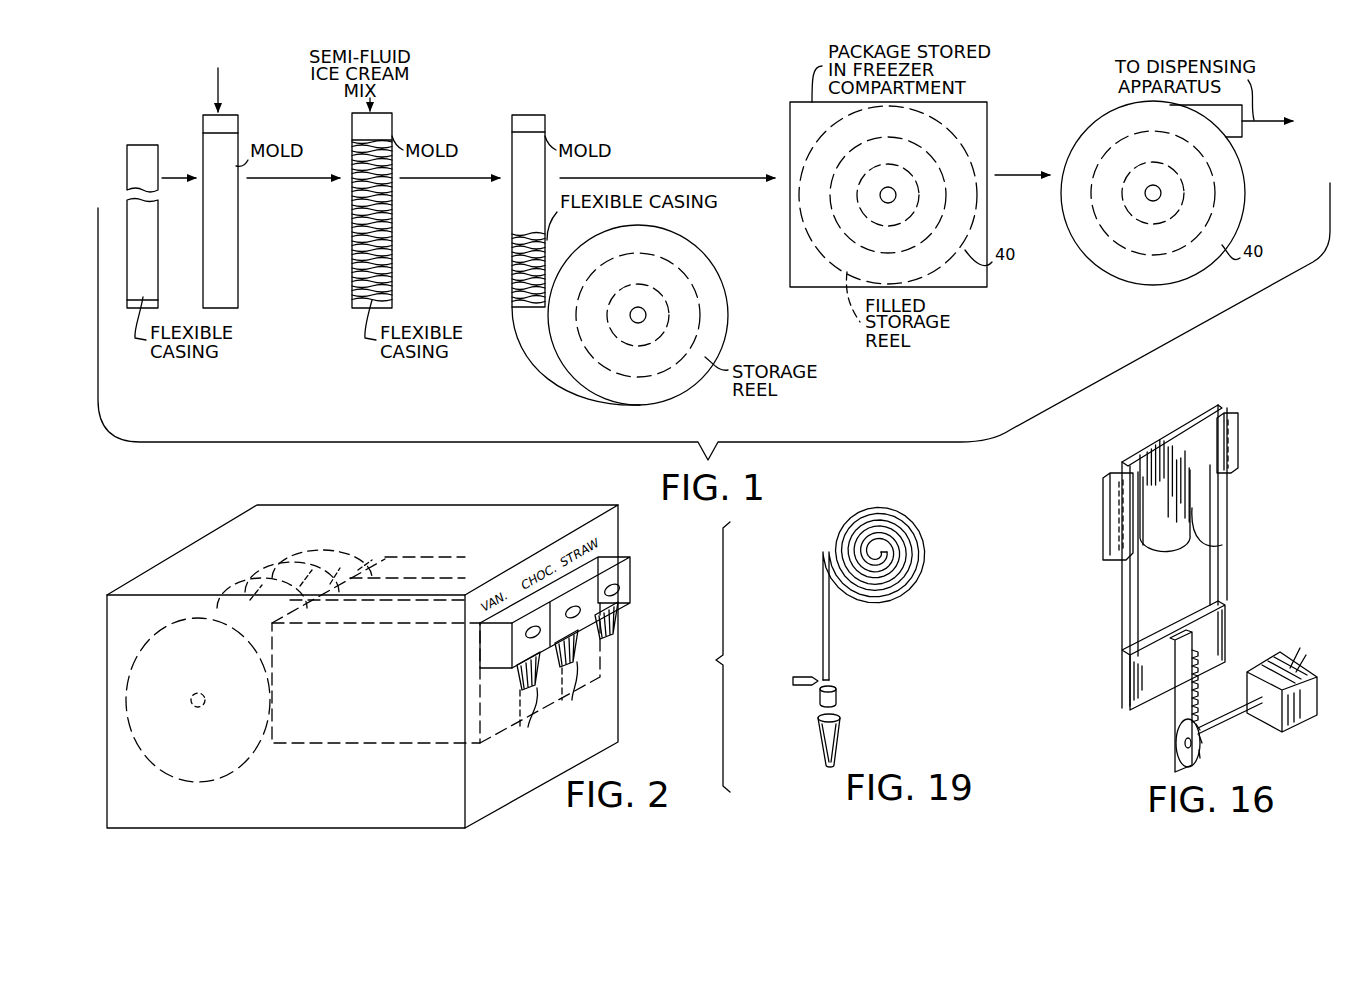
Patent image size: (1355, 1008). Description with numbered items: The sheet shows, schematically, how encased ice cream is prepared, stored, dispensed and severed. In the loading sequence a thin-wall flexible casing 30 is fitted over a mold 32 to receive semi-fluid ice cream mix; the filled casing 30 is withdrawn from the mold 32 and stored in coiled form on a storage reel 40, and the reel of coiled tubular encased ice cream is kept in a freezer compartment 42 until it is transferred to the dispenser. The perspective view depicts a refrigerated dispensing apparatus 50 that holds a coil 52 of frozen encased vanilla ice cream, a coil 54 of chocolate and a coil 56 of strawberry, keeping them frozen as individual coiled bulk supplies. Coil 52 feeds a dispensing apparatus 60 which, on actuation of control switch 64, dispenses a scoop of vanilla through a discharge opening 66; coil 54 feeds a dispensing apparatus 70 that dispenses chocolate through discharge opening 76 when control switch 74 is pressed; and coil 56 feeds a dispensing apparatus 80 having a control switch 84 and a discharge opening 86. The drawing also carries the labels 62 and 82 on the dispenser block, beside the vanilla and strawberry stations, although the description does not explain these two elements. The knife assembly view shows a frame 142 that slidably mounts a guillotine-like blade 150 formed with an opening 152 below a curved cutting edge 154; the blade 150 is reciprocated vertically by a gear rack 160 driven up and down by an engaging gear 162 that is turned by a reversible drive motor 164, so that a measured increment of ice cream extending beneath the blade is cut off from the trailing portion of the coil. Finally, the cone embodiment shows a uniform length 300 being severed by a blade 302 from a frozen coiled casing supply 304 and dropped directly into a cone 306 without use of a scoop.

In FIG. 1, the flexible casing 30 is at (160, 255).
In FIG. 1, the mold 32 is at (240, 255).
In FIG. 1, the storage reel 40 is at (705, 265).
In FIG. 1, the freezer compartment 42 is at (788, 117).
In FIG. 2, the refrigerated dispensing apparatus 50 is at (432, 522).
In FIG. 2, the coil of frozen tubular encased vanilla ice cream 52 is at (185, 616).
In FIG. 2, the coil of frozen tubular encased chocolate ice cream 54 is at (250, 574).
In FIG. 2, the coil of frozen tubular encased strawberry ice cream 56 is at (318, 557).
In FIG. 2, the dispensing apparatus 60 is at (380, 620).
In FIG. 2, the dispenser block 62 is at (492, 650).
In FIG. 2, the control switch 64 is at (524, 632).
In FIG. 2, the discharge opening 66 is at (529, 717).
In FIG. 2, the dispensing apparatus 70 is at (364, 570).
In FIG. 2, the control switch 74 is at (616, 612).
In FIG. 2, the discharge opening 76 is at (576, 688).
In FIG. 2, the dispensing apparatus 80 is at (449, 566).
In FIG. 2, the straw compartment 82 is at (630, 568).
In FIG. 2, the control switch 84 is at (620, 586).
In FIG. 2, the discharge opening 86 is at (615, 629).
In FIG. 16, the frame 142 is at (1238, 450).
In FIG. 16, the guillotine like blade 150 is at (1190, 512).
In FIG. 16, the opening 152 is at (1163, 578).
In FIG. 16, the curved cutting edge 154 is at (1208, 543).
In FIG. 16, the gear rack 160 is at (1174, 722).
In FIG. 16, the gear 162 is at (1200, 749).
In FIG. 16, the reversible drive motor 164 is at (1268, 670).
In FIG. 19, the uniform length 300 is at (838, 701).
In FIG. 19, the blade 302 is at (816, 672).
In FIG. 19, the frozen coiled casing supply 304 is at (908, 598).
In FIG. 19, the cone 306 is at (840, 733).